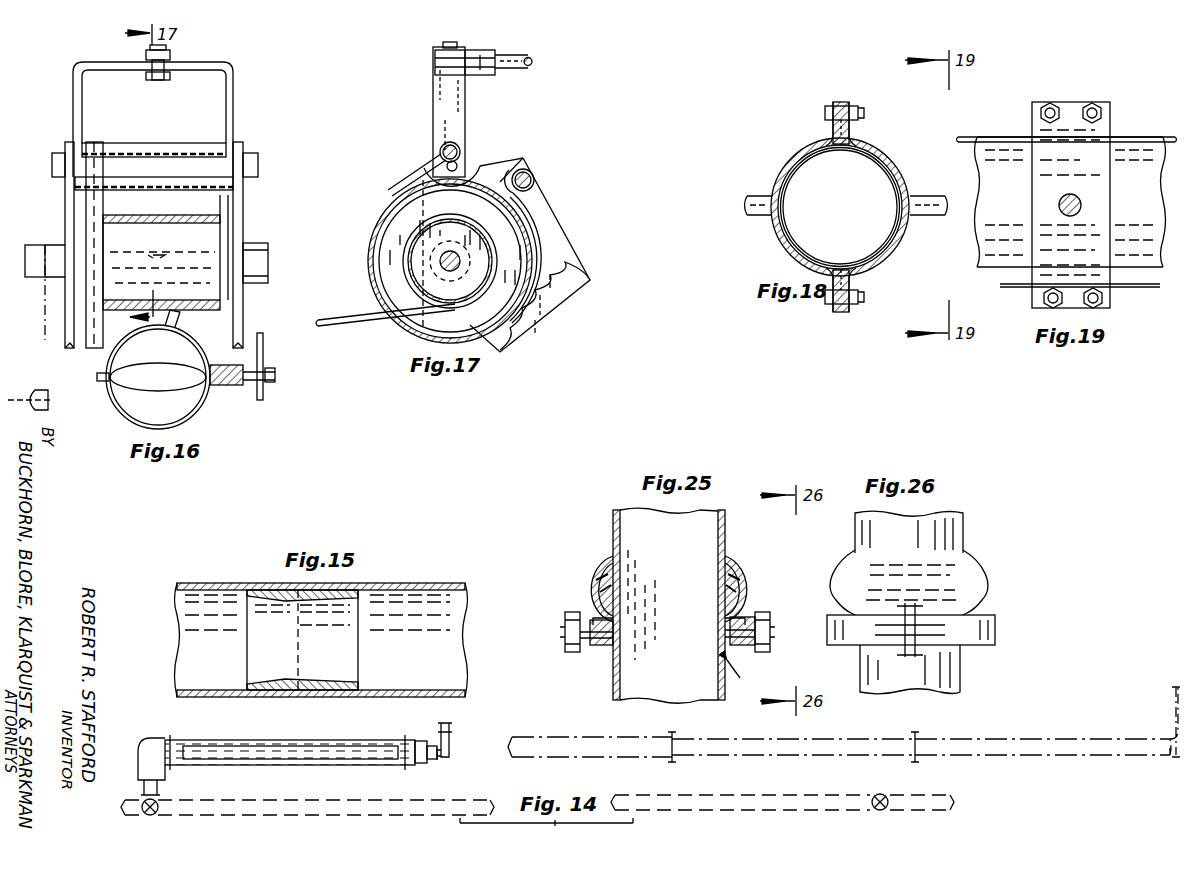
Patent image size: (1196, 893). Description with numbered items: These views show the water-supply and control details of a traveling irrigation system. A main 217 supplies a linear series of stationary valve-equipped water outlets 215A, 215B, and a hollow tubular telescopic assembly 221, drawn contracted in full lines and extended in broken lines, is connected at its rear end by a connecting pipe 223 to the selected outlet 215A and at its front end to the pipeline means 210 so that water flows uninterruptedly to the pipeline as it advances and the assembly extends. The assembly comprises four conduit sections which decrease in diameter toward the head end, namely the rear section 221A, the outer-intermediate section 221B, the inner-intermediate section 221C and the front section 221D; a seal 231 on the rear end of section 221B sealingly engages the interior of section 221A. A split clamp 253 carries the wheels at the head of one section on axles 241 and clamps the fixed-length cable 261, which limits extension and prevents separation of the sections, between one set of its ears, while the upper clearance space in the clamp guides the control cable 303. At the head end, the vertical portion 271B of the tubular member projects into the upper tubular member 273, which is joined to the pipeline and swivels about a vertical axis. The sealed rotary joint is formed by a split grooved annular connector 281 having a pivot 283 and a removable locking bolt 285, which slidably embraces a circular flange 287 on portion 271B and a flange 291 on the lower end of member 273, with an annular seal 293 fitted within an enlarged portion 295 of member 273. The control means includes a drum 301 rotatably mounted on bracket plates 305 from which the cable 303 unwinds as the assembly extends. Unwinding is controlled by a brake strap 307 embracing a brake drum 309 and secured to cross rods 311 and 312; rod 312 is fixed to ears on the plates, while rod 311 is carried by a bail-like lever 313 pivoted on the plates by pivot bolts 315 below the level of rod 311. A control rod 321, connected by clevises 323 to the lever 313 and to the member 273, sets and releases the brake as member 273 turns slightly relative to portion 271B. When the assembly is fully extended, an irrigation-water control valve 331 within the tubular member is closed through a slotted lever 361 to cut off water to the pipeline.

In FIG. 16, the drum 301 is at (165, 247).
In FIG. 17, the drum 301 is at (455, 255).
In FIG. 16, the cable 303 is at (150, 215).
In FIG. 17, the cable 303 is at (333, 326).
In FIG. 18, the cable 303 is at (836, 146).
In FIG. 19, the cable 303 is at (1003, 137).
In FIG. 16, the bracket plates 305 is at (65, 205).
In FIG. 17, the bracket plates 305 is at (565, 244).
In FIG. 16, the brake strap 307 is at (86, 222).
In FIG. 17, the brake strap 307 is at (418, 186).
In FIG. 17, the brake drum 309 is at (492, 165).
In FIG. 16, the cross rod 311 is at (163, 143).
In FIG. 17, the cross rod 311 is at (440, 150).
In FIG. 16, the cross rod 312 is at (148, 182).
In FIG. 17, the cross rod 312 is at (533, 191).
In FIG. 16, the bail-like lever 313 is at (233, 103).
In FIG. 17, the bail-like lever 313 is at (433, 111).
In FIG. 16, the pivot bolts 315 is at (52, 160).
In FIG. 17, the pivot bolts 315 is at (468, 160).
In FIG. 17, the control rod 321 is at (531, 62).
In FIG. 17, the clevises 323 is at (490, 50).
In FIG. 16, the irrigation-water control valve 331 is at (110, 370).
In FIG. 16, the slotted lever 361 is at (263, 350).
In FIG. 18, the axles 241 is at (928, 196).
In FIG. 19, the axles 241 is at (1082, 202).
In FIG. 18, the split clamp 253 is at (870, 150).
In FIG. 19, the split clamp 253 is at (1065, 102).
In FIG. 18, the cable 261 is at (852, 280).
In FIG. 19, the cable 261 is at (1012, 288).
In FIG. 19, the upper tubular member 273 is at (1070, 202).
In FIG. 25, the upper tubular member 273 is at (613, 530).
In FIG. 26, the upper tubular member 273 is at (965, 523).
In FIG. 25, the split grooved annular connector 281 is at (738, 648).
In FIG. 26, the split grooved annular connector 281 is at (997, 630).
In FIG. 25, the pivot 283 is at (572, 612).
In FIG. 25, the removable locking bolt 285 is at (770, 618).
In FIG. 25, the circular flange 287 is at (605, 648).
In FIG. 25, the flange 291 is at (745, 615).
In FIG. 25, the annular seal 293 is at (738, 590).
In FIG. 25, the enlarged portion 295 is at (730, 562).
In FIG. 26, the enlarged portion 295 is at (984, 572).
In FIG. 25, the vertical portion 271B is at (722, 700).
In FIG. 26, the vertical portion 271B is at (962, 668).
In FIG. 15, the seal 231 is at (267, 583).
In FIG. 14, the telescopic assembly 221 is at (300, 768).
In FIG. 15, the outer or rear conduit section 221A is at (357, 583).
In FIG. 14, the outer or rear conduit section 221A is at (279, 766).
In FIG. 15, the outer-intermediate conduit section 221B is at (465, 604).
In FIG. 14, the outer-intermediate conduit section 221B is at (625, 760).
In FIG. 14, the inner-intermediate conduit section 221C is at (800, 760).
In FIG. 14, the front or inner conduit section 221D is at (1030, 760).
In FIG. 14, the pipeline means 210 is at (450, 729).
In FIG. 14, the connecting pipe 223 is at (160, 790).
In FIG. 14, the water outlet 215A is at (160, 813).
In FIG. 14, the water outlet 215B is at (878, 794).
In FIG. 14, the main 217 is at (318, 816).